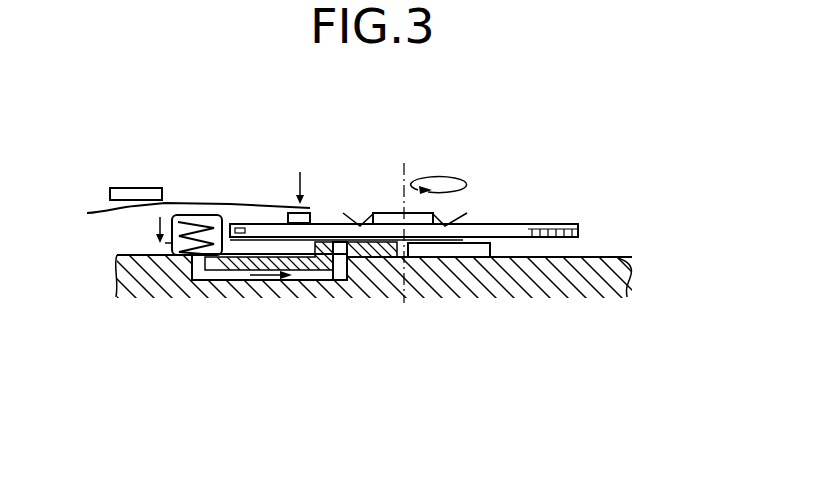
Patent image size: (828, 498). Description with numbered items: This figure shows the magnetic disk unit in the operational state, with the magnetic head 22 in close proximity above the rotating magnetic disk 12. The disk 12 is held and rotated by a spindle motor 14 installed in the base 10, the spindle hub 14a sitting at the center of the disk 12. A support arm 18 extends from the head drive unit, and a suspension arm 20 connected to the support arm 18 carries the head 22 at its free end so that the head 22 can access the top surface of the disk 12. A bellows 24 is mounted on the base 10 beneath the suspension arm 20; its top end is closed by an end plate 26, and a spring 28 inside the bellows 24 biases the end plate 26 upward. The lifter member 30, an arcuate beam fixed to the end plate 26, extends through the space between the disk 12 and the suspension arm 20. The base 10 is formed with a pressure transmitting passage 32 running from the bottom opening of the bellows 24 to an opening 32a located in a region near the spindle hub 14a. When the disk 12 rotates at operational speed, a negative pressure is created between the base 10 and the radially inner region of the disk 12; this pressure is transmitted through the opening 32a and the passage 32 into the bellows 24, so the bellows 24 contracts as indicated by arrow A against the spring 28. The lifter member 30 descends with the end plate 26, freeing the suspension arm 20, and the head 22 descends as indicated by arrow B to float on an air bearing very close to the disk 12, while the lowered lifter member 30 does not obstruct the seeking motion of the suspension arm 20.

The base 10 is at (630, 268).
The magnetic disk 12 is at (544, 224).
The spindle motor 14 is at (425, 216).
The spindle hub 14a is at (448, 243).
The support arm 18 is at (127, 193).
The suspension arm 20 is at (247, 205).
The magnetic head 22 is at (311, 218).
The bellows 24 is at (167, 242).
The end plate 26 is at (203, 215).
The spring 28 is at (196, 230).
The lifter member 30 is at (86, 214).
The pressure transmitting passage 32 is at (233, 281).
The opening 32a is at (340, 281).